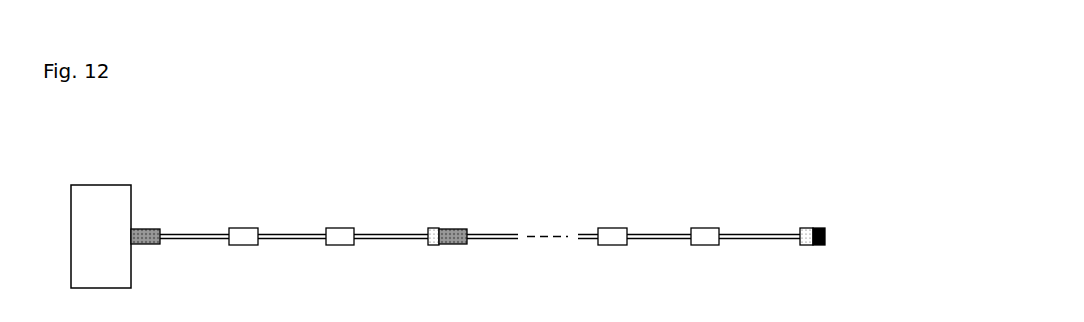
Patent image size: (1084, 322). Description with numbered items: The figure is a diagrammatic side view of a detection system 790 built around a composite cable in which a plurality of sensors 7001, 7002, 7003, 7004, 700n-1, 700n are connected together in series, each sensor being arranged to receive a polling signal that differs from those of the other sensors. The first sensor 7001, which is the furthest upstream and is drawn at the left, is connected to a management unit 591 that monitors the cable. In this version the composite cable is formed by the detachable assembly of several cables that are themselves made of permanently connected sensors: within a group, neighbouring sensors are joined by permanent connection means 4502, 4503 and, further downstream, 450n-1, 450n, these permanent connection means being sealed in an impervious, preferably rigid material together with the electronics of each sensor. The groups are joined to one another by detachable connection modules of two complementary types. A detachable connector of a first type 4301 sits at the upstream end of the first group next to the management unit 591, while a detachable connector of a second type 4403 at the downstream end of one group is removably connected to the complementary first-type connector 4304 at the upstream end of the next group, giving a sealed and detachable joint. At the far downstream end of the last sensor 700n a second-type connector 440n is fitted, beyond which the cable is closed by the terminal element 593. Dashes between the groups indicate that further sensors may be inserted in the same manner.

The detection system 790 is at (397, 107).
The management unit 591 is at (101, 185).
The terminator / end cap 593 is at (829, 237).
The detachable connector of a first type 4301 is at (143, 228).
The detachable connector of a first type 4304 is at (457, 228).
The permanent connection means 4502 is at (240, 227).
The permanent connection means 4503 is at (342, 227).
The permanent connection means 450n-1 is at (610, 227).
The permanent connection means 450n is at (710, 227).
The detachable connector of a second type 4403 is at (433, 227).
The detachable connector of a second type 440n is at (807, 227).
The sensor 7001 is at (178, 251).
The sensor 7002 is at (264, 251).
The sensor 7003 is at (376, 251).
The sensor 7004 is at (496, 251).
The sensor 700n-1 is at (646, 251).
The sensor 700n is at (747, 253).